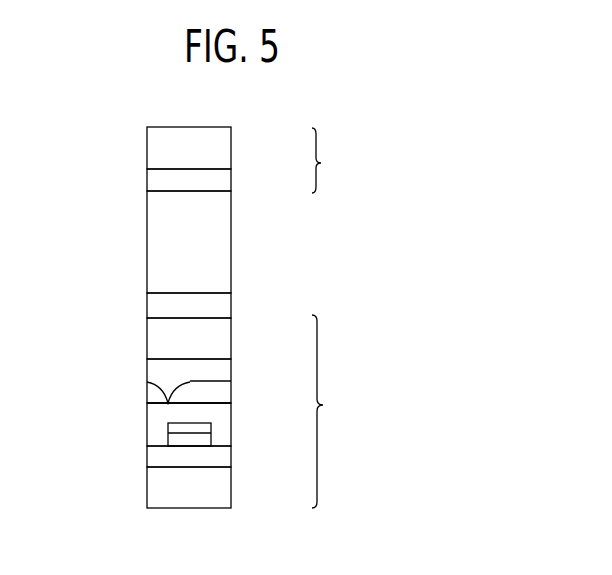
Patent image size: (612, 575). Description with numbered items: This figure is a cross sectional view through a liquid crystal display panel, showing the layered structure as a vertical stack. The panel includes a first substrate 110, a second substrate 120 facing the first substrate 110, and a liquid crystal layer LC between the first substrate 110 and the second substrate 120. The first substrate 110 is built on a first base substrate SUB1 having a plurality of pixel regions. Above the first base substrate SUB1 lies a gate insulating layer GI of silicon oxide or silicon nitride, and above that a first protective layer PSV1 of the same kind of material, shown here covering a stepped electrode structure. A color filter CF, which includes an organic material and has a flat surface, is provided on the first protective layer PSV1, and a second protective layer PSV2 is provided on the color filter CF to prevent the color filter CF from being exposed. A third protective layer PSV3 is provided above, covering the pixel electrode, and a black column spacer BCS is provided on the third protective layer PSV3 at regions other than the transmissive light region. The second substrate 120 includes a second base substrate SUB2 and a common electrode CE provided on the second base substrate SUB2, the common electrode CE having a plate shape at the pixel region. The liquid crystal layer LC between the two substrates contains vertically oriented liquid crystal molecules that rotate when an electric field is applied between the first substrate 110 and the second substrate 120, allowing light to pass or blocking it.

The second base substrate SUB2 is at (222, 143).
The common electrode CE is at (222, 181).
The liquid crystal layer LC is at (224, 256).
The black column spacer BCS is at (159, 303).
The third protective layer PSV3 is at (224, 335).
The second protective layer PSV2 is at (224, 370).
The color filter CF is at (226, 395).
The first protective layer PSV1 is at (224, 429).
The gate insulating layer GI is at (222, 458).
The first base substrate SUB1 is at (222, 492).
The second substrate 120 is at (332, 160).
The first substrate 110 is at (332, 411).